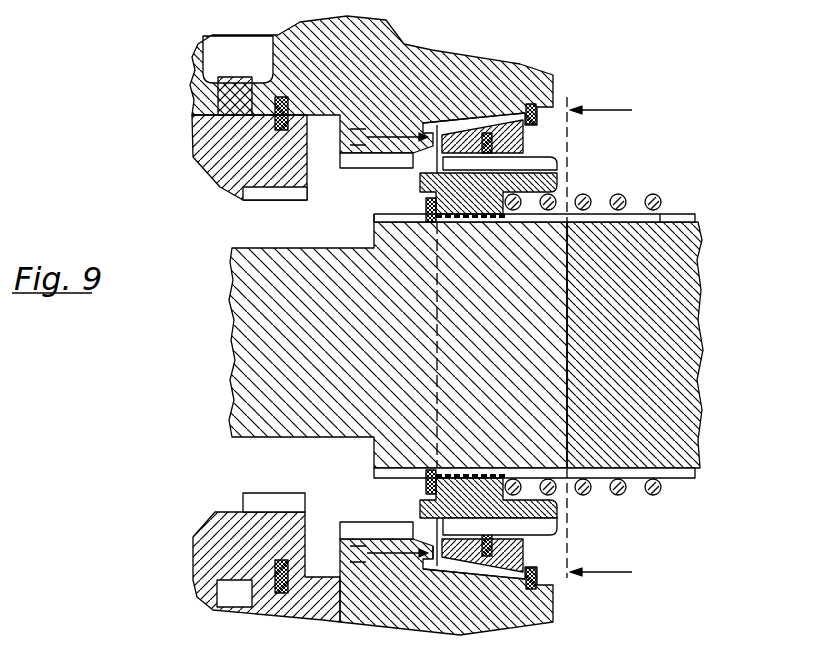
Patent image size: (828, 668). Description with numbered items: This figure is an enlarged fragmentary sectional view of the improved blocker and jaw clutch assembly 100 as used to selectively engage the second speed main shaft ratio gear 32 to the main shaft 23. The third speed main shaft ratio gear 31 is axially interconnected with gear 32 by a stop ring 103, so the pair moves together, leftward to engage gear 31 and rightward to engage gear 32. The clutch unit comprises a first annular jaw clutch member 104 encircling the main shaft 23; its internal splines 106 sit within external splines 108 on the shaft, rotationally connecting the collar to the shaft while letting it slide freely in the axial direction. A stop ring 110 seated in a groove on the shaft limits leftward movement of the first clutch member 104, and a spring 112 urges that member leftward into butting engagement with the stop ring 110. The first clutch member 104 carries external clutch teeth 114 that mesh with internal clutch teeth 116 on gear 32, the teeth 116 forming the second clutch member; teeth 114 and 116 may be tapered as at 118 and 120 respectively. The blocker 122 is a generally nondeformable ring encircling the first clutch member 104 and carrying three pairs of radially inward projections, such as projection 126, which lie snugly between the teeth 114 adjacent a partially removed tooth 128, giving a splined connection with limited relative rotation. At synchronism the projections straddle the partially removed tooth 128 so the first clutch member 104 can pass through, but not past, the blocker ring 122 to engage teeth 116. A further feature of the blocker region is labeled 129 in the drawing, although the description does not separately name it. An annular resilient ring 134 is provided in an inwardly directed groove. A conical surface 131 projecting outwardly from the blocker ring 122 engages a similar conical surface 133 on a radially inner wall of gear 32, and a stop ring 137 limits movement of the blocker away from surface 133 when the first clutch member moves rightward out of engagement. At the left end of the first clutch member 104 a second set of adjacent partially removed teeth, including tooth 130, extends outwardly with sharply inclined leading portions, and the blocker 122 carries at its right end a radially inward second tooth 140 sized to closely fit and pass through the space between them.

The main shaft 23 is at (466, 345).
The third speed main shaft ratio gear 31 is at (192, 100).
The second speed main shaft ratio gear 32 is at (401, 66).
The blocker and jaw clutch assembly 100 is at (587, 79).
The stop ring 103 is at (283, 131).
The first annular jaw clutch member 104 is at (534, 190).
The internal splines 106 is at (452, 477).
The external splines 108 is at (683, 216).
The stop ring 110 is at (426, 206).
The spring 112 is at (657, 212).
The external clutch teeth 114 is at (436, 159).
The internal clutch teeth 116 is at (357, 161).
The taper 118 is at (427, 520).
The taper 120 is at (414, 520).
The blocker ring 122 is at (544, 139).
The radially inwardly extending projection 126 is at (440, 165).
The partially removed tooth 128 is at (533, 165).
The tapered bore surface 129 is at (482, 120).
The partially removed tooth 130 is at (432, 535).
The conical surface 131 is at (460, 580).
The conical surface 133 is at (527, 578).
The annular resilient ring 134 is at (490, 520).
The stop ring 137 is at (531, 101).
The second tooth 140 is at (523, 528).